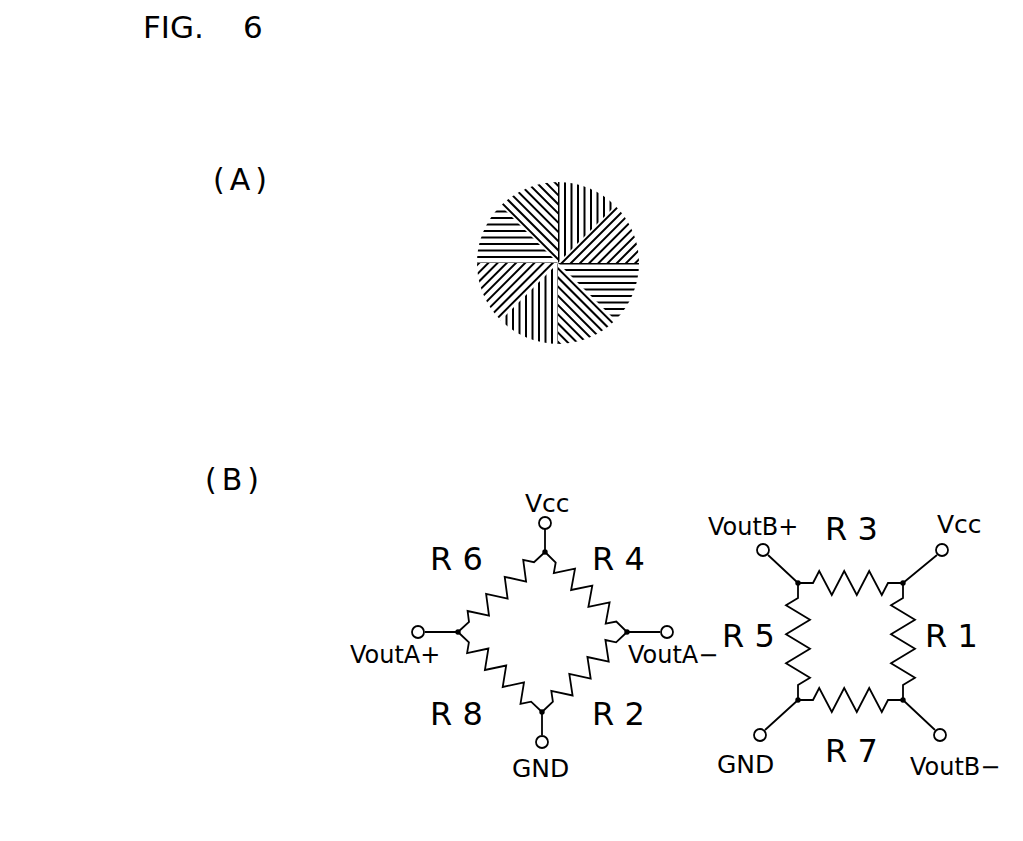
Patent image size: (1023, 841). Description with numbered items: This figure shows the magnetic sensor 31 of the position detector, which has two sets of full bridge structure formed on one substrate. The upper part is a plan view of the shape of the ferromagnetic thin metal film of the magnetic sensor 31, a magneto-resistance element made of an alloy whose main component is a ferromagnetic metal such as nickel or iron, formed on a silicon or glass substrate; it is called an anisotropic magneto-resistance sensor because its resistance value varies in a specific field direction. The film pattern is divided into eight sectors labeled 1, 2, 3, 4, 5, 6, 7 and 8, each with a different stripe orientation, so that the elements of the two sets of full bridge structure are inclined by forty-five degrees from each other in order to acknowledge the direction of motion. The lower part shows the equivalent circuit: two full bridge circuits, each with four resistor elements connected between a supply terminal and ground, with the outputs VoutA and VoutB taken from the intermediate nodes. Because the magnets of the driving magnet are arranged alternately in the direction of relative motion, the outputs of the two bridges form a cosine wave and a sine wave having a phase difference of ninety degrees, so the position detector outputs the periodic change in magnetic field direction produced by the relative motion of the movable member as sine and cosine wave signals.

The magnetic sensor 31 is at (740, 229).
The magnetoresistive region 1 is at (555, 259).
The magnetoresistive region 2 is at (557, 263).
The magnetoresistive region 3 is at (561, 260).
The magnetoresistive region 4 is at (557, 270).
The magnetoresistive region 5 is at (555, 270).
The magnetoresistive region 6 is at (557, 263).
The magnetoresistive region 7 is at (557, 260).
The magnetoresistive region 8 is at (557, 259).